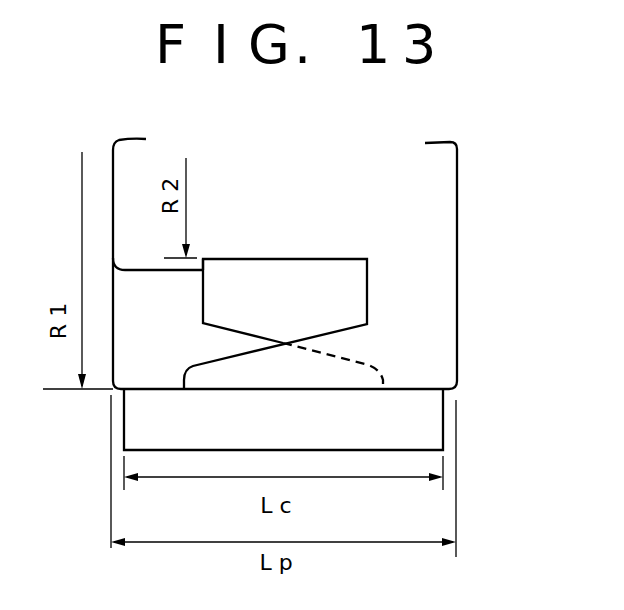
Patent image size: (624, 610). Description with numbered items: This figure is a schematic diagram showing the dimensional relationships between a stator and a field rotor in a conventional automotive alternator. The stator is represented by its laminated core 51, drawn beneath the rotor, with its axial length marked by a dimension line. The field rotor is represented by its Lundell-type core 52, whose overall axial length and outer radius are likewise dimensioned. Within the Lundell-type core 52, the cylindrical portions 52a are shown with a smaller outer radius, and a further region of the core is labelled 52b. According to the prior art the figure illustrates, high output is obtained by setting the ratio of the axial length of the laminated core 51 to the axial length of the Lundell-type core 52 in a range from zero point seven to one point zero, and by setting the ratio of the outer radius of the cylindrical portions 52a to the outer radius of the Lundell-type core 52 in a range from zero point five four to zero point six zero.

The laminated core 51 is at (433, 424).
The Lundell-type core 52 is at (468, 253).
The cylindrical portions 52a is at (348, 200).
The lower portion of projection 52b is at (435, 291).